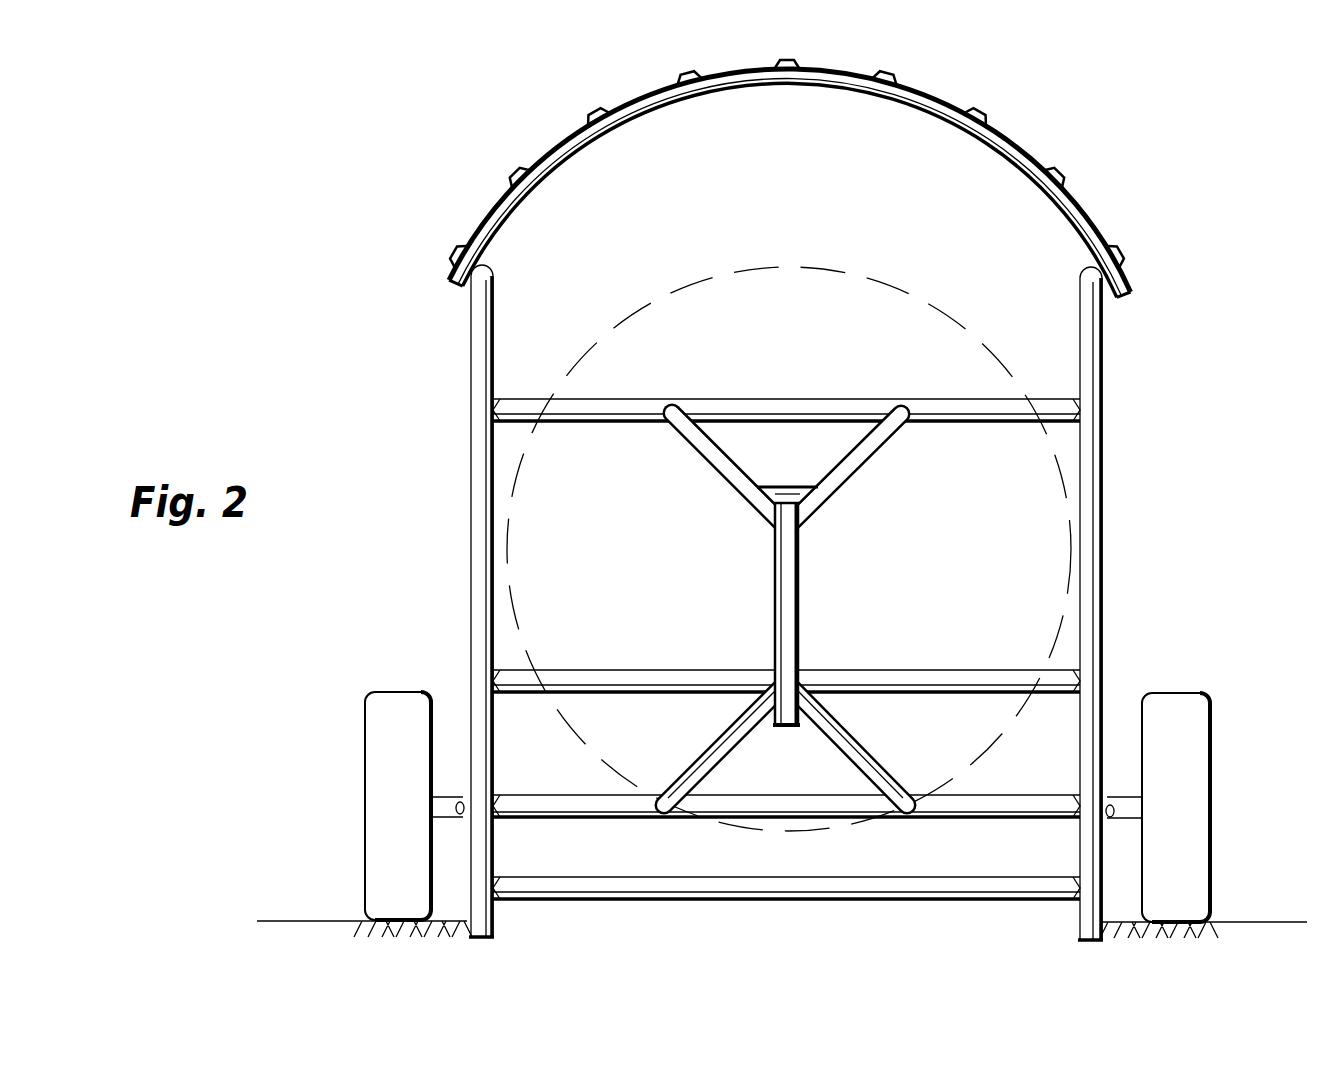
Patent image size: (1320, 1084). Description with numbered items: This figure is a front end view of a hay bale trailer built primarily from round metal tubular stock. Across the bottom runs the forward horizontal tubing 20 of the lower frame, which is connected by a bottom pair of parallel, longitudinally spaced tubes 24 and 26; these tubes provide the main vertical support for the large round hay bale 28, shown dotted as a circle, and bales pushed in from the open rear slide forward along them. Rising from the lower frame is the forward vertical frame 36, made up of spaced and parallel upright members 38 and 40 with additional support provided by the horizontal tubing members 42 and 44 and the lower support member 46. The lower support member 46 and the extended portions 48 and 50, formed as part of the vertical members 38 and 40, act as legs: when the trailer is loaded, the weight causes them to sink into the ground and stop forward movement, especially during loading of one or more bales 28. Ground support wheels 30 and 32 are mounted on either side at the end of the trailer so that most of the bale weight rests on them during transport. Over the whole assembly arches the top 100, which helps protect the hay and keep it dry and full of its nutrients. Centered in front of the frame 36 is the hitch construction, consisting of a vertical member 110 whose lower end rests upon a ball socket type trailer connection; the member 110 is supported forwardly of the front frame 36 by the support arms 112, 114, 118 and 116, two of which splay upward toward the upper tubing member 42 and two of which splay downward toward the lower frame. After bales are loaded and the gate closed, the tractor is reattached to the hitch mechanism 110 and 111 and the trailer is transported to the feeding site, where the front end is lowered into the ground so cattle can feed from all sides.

The forward horizontal tubing 20 is at (982, 808).
The bottom longitudinal tube 24 is at (920, 814).
The bottom longitudinal tube 26 is at (660, 812).
The hay bale 28 is at (812, 302).
The ground support wheel 30 is at (1176, 706).
The ground support wheel 32 is at (377, 716).
The forward vertical frame 36 is at (810, 604).
The upright member 38 is at (1087, 597).
The upright member 40 is at (480, 495).
The horizontal tubing member 42 is at (1058, 410).
The horizontal tubing member 44 is at (960, 681).
The lower support member 46 is at (735, 888).
The extended portion 48 is at (1085, 912).
The extended portion 50 is at (482, 930).
The top 100 is at (927, 100).
The vertical member 110 is at (745, 637).
The hitch mechanism portion 111 is at (788, 727).
The support arm 112 is at (848, 470).
The support arm 114 is at (697, 443).
The support arm 116 is at (891, 774).
The support arm 118 is at (687, 772).